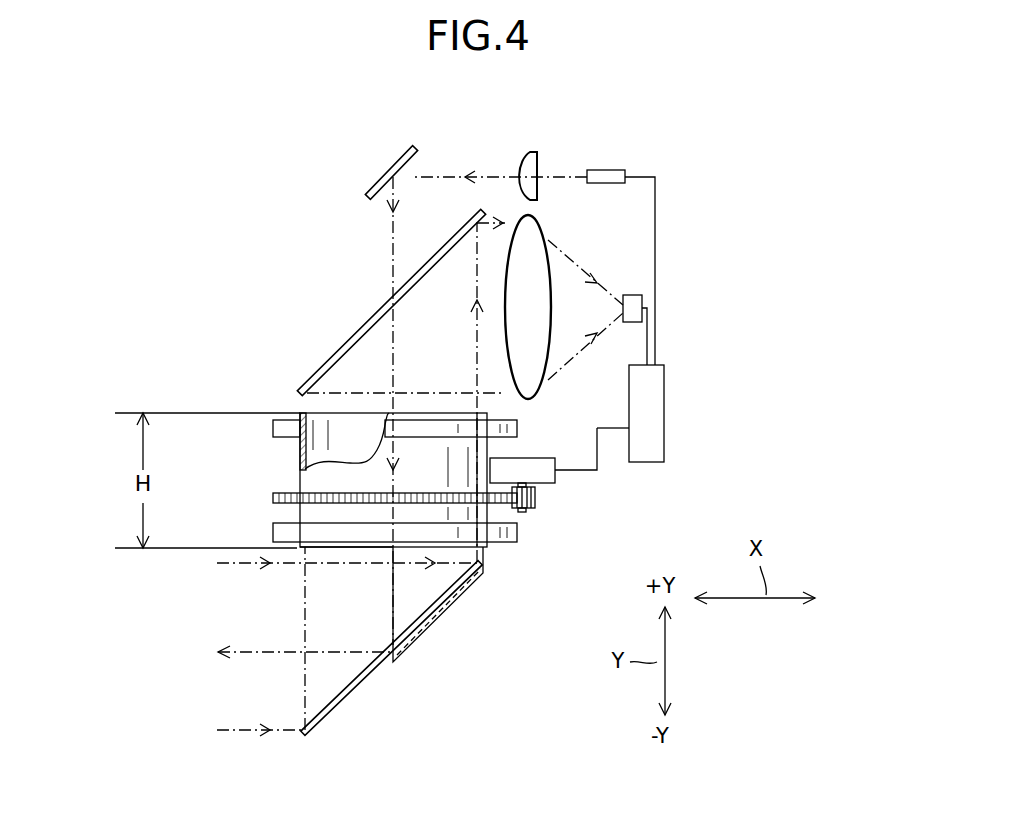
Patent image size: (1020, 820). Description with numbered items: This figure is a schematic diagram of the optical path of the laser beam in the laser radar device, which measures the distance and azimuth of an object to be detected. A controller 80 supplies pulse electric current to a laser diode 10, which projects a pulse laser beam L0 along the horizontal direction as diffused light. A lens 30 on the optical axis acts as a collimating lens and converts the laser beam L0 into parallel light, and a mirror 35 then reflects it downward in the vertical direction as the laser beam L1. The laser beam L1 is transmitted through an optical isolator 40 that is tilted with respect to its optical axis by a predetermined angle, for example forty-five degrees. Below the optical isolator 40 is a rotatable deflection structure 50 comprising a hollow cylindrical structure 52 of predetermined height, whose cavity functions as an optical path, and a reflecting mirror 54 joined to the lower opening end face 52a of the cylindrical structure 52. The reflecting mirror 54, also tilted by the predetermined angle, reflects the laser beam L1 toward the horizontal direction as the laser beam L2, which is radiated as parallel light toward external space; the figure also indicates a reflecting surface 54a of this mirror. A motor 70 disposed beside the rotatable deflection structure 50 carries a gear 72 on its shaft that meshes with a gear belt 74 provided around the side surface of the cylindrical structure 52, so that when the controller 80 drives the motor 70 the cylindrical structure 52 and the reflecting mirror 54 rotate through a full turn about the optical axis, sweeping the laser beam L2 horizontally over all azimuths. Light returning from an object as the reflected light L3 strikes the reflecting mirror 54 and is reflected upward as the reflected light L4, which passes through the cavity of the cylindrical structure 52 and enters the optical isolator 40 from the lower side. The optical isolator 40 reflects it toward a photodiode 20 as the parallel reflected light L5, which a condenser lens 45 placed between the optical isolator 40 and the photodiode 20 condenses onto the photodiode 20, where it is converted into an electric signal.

The laser diode 10 is at (607, 170).
The photodiode 20 is at (632, 295).
The lens 30 is at (531, 152).
The mirror 35 is at (370, 181).
The optical isolator 40 is at (358, 330).
The condenser lens 45 is at (540, 228).
The rotatable deflection structure 50 is at (287, 458).
The cylindrical structure 52 is at (300, 482).
The opening end face 52a is at (343, 548).
The reflecting mirror 54 is at (357, 695).
The reflecting surface of mirror 54a is at (355, 684).
The motor 70 is at (522, 458).
The gear 72 is at (535, 497).
The gear belt 74 is at (273, 498).
The controller 80 is at (664, 412).
The laser beam L0 is at (575, 175).
The laser beam L1 is at (393, 245).
The laser beam L2 is at (278, 651).
The reflected light L3 is at (222, 565).
The reflected light L4 is at (303, 693).
The reflected light L5 is at (477, 340).